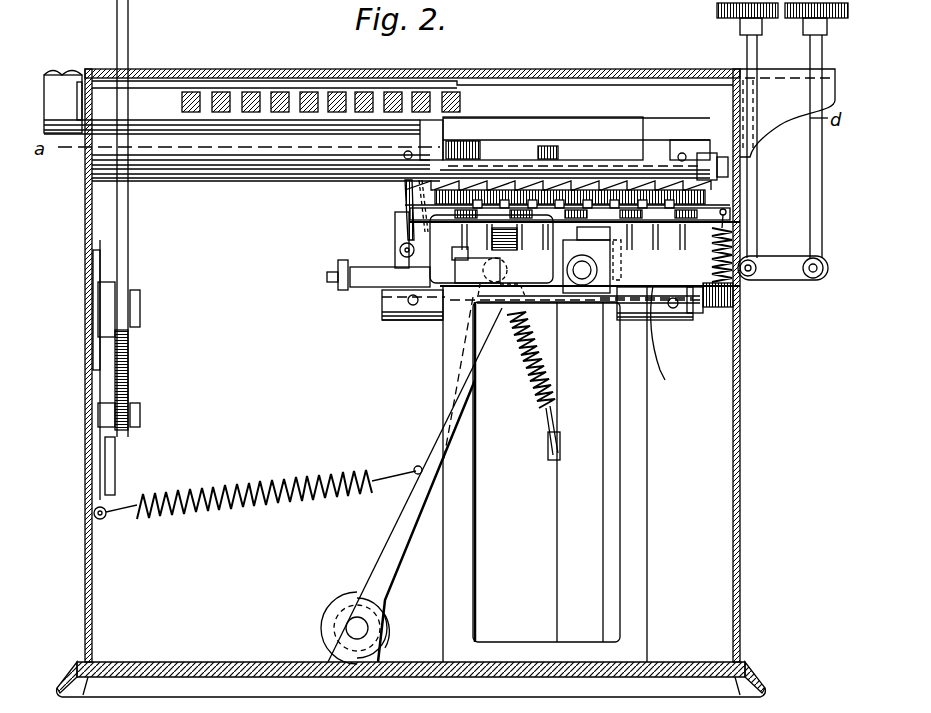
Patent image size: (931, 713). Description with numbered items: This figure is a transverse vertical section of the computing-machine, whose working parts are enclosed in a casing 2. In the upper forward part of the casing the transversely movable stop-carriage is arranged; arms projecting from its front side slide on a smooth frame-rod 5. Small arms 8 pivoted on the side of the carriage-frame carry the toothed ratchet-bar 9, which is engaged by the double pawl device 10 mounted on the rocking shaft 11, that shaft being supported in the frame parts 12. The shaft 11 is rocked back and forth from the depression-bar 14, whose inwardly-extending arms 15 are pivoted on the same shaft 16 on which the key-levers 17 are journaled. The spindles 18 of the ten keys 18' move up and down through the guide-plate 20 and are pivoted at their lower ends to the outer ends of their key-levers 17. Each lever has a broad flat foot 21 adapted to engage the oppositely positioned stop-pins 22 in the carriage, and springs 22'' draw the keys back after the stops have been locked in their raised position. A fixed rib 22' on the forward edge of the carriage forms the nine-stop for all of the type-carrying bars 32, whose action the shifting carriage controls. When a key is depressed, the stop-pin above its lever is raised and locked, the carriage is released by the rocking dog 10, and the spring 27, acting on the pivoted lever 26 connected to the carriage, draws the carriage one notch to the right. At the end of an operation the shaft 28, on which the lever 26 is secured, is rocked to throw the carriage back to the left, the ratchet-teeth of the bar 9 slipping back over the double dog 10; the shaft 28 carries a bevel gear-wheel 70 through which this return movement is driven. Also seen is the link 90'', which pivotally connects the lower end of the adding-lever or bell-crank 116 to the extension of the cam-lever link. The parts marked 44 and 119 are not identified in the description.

The casing 2 is at (578, 71).
The frame-rod 5 is at (322, 182).
The small arms 8 is at (688, 142).
The toothed ratchet-bar 9 is at (577, 180).
The double pawl device 10 is at (400, 200).
The rocking shaft 11 is at (382, 305).
The frame parts 12 is at (647, 432).
The depression-bar 14 is at (700, 312).
The inwardly-extending arms 15 is at (693, 287).
The shaft 16 is at (583, 286).
The key-levers 17 is at (702, 276).
The spindles 18 is at (762, 146).
The keys 18' is at (762, 27).
The guide-plate 20 is at (780, 78).
The broad flat foot 21 is at (456, 258).
The stop-pins 22 is at (670, 338).
The fixed rib 22' is at (575, 138).
The springs 22'' is at (524, 386).
The pivoted lever 26 is at (373, 546).
The spring 27 is at (258, 486).
The shaft 28 is at (340, 626).
The type-carrying bars 32 is at (303, 90).
The guide bar 44 is at (322, 128).
The bevel gear-wheel 70 is at (393, 628).
The link 90'' is at (132, 370).
The adding-lever 116 is at (133, 15).
The guide rail 119 is at (286, 178).